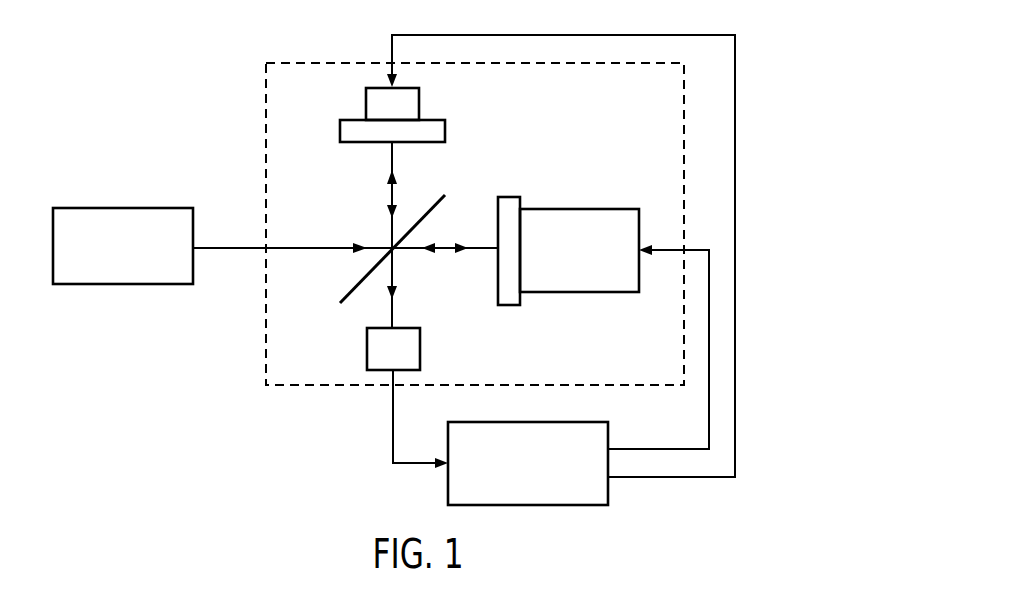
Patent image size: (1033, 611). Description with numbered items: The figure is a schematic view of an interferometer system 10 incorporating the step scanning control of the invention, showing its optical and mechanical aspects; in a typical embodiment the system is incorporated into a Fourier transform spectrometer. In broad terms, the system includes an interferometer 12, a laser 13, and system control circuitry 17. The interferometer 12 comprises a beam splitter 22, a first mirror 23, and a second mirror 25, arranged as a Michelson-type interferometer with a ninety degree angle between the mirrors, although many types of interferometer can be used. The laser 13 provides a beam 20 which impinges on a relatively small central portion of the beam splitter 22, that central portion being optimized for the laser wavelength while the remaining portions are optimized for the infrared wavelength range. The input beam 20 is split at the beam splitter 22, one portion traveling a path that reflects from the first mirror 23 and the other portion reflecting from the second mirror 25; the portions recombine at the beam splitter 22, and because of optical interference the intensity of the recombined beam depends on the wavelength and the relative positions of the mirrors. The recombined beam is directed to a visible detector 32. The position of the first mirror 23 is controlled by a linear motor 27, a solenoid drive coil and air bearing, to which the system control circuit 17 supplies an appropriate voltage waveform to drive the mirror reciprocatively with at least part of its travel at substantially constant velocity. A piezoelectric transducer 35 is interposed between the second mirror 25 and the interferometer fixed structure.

The interferometer system 10 is at (198, 422).
The interferometer 12 is at (266, 155).
The laser 13 is at (133, 208).
The system control circuitry 17 is at (610, 437).
The beam 20 is at (262, 247).
The beam splitter 22 is at (360, 280).
The first mirror 23 is at (510, 196).
The second mirror 25 is at (368, 143).
The linear motor 27 is at (567, 208).
The visible detector 32 is at (367, 356).
The piezoelectric transducer (PZT) 35 is at (419, 97).